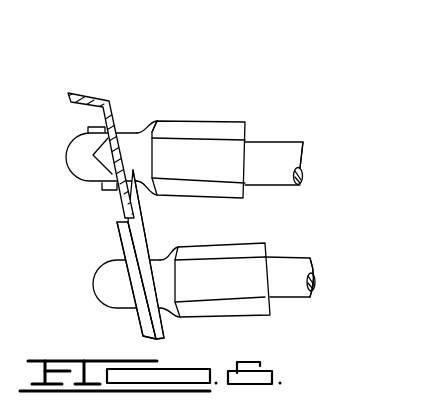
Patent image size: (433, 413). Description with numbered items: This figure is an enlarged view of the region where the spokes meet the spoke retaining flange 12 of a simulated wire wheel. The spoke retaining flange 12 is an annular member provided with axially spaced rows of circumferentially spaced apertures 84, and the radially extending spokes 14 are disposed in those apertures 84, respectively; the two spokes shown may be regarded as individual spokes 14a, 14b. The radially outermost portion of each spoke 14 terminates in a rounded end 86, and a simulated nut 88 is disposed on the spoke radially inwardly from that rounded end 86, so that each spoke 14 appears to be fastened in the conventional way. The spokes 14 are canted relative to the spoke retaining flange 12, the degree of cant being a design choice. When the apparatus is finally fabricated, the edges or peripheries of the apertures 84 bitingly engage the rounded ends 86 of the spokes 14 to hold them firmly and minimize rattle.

The spoke retaining flange 12 is at (143, 334).
The spoke 14 is at (268, 140).
The first end of rod 14a is at (304, 141).
The second end of rod 14b is at (312, 268).
The apertures 84 is at (108, 190).
The rounded end 86 is at (67, 151).
The simulated nut 88 is at (193, 143).